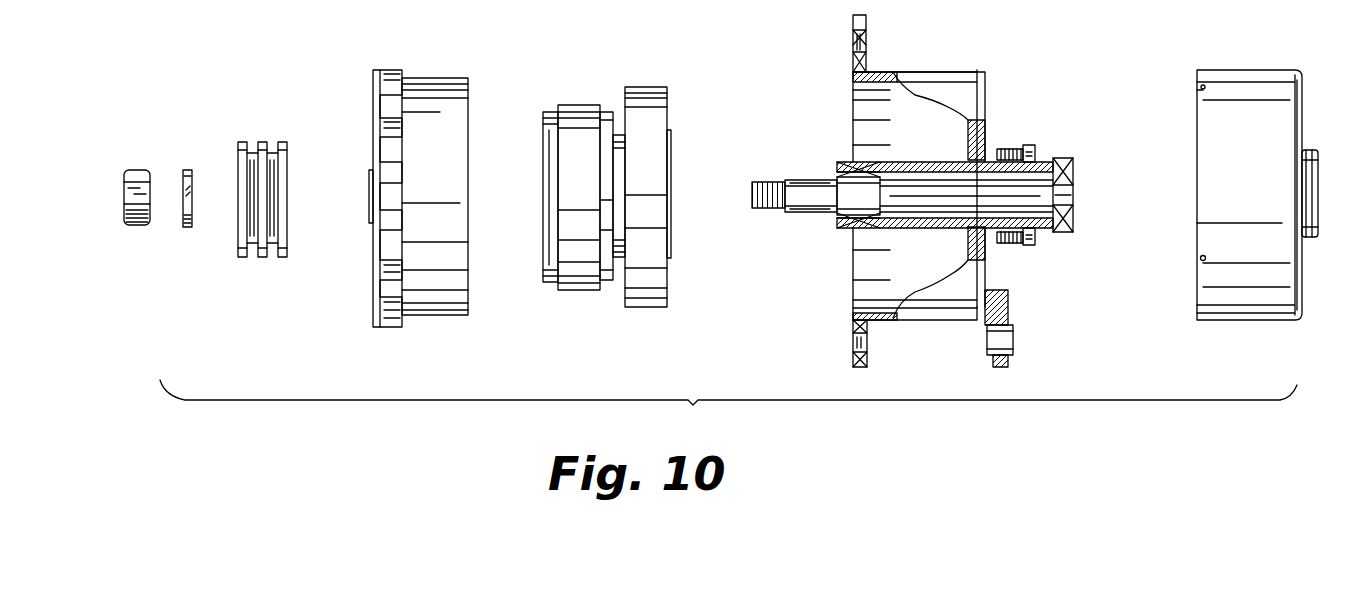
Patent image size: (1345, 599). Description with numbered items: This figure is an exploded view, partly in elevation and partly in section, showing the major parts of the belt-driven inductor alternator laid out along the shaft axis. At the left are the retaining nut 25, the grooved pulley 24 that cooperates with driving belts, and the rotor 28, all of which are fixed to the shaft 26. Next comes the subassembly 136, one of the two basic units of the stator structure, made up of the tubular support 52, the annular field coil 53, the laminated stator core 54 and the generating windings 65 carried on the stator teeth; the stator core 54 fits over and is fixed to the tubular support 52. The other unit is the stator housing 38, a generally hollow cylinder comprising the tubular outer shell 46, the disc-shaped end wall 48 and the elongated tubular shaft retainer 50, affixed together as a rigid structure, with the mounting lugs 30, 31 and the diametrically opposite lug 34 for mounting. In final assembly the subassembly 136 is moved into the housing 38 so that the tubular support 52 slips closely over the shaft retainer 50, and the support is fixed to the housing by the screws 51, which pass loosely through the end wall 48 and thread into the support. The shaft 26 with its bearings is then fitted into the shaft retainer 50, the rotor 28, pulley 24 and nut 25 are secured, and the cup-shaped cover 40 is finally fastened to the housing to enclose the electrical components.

The retaining nut 25 is at (143, 168).
The grooved pulley 24 is at (240, 142).
The rotor 28 is at (405, 88).
The subassembly 136 is at (588, 172).
The stator core 54 is at (572, 105).
The generating winding 65 is at (542, 264).
The tubular support 52 is at (623, 250).
The field coil 53 is at (638, 88).
The shaft 26 is at (820, 215).
The shaft retainer 50 is at (890, 227).
The stator housing 38 is at (943, 82).
The tubular outer shell 46 is at (880, 73).
The end wall 48 is at (987, 137).
The lug 34 is at (866, 24).
The mounting lug 30 is at (868, 353).
The screw 51 is at (1030, 145).
The mounting lug 31 is at (1010, 361).
The cover 40 is at (1223, 70).